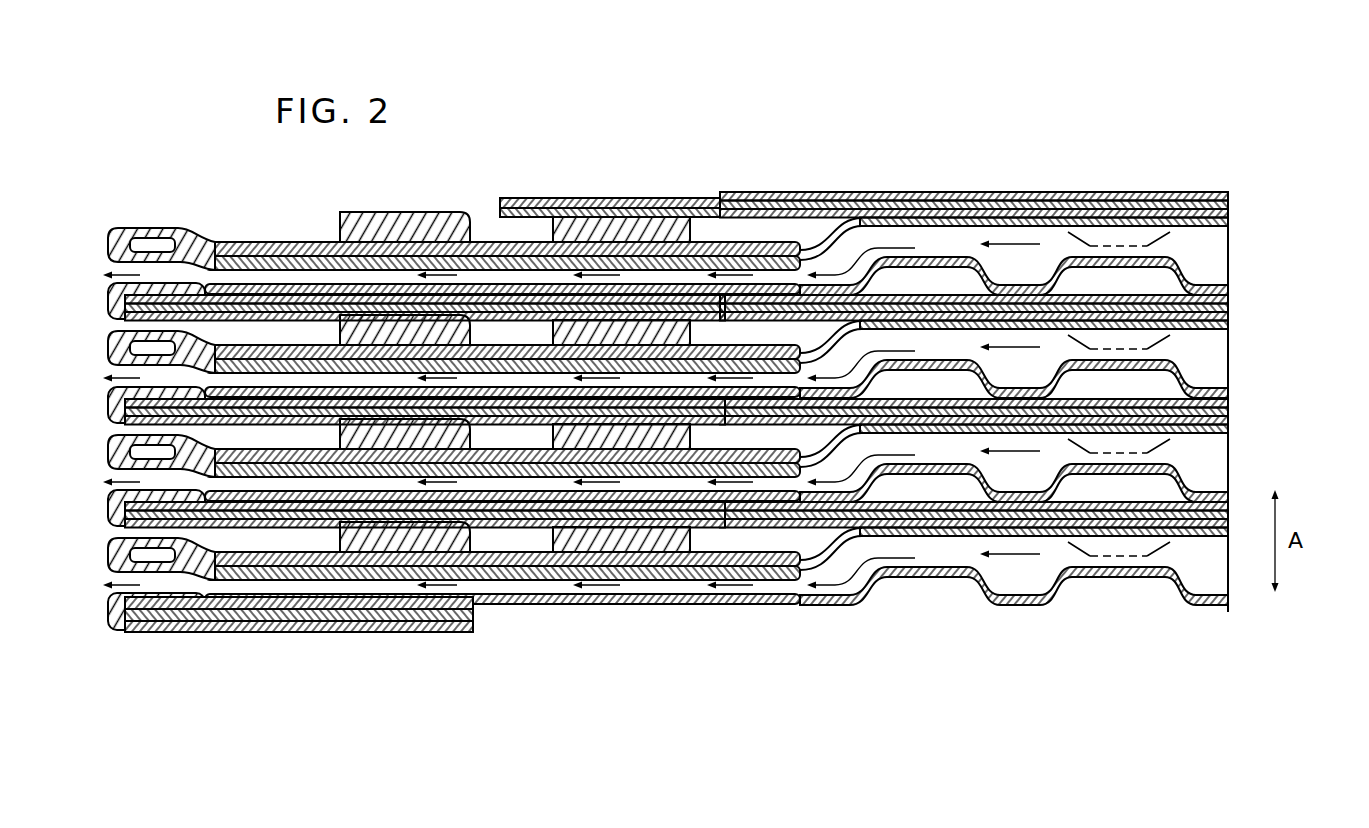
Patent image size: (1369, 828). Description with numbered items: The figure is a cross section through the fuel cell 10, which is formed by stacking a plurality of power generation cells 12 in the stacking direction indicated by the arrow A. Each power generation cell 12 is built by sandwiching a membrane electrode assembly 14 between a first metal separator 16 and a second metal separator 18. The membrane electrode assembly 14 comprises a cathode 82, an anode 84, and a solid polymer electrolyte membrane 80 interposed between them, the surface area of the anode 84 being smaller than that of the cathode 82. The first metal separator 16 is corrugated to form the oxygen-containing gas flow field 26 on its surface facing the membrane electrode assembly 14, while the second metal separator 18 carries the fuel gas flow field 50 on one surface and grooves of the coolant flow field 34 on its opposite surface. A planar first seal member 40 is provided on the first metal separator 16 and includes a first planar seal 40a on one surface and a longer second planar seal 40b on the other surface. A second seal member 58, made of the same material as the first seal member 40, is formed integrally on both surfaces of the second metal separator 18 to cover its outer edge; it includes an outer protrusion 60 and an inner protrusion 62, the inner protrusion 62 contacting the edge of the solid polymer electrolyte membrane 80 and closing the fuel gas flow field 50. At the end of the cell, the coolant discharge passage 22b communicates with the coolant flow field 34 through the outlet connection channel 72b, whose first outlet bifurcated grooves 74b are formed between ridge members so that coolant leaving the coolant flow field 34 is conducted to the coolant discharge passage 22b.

The fuel cell 10 is at (524, 136).
The power generation cell 12 is at (698, 325).
The membrane electrode assembly 14 is at (1032, 296).
The first metal separator 16 is at (1210, 381).
The second metal separator 18 is at (1186, 341).
The coolant discharge passage 22b is at (81, 236).
The oxygen-containing gas flow field 26 is at (716, 278).
The coolant flow field 34 is at (920, 245).
The first seal member 40 is at (381, 261).
The first planar seal 40a is at (300, 300).
The second planar seal 40b is at (490, 229).
The fuel gas flow field 50 is at (1032, 282).
The second seal member 58 is at (100, 343).
The outer protrusion 60 is at (372, 278).
The inner protrusion 62 is at (616, 240).
The outlet connection channel 72b is at (817, 386).
The first outlet bifurcated grooves 74b is at (790, 272).
The solid polymer electrolyte membrane 80 is at (1232, 204).
The cathode 82 is at (1232, 194).
The anode 84 is at (1232, 218).